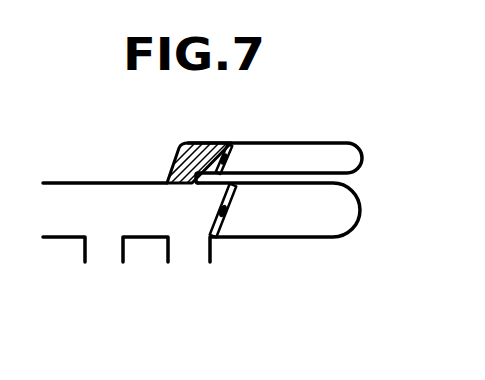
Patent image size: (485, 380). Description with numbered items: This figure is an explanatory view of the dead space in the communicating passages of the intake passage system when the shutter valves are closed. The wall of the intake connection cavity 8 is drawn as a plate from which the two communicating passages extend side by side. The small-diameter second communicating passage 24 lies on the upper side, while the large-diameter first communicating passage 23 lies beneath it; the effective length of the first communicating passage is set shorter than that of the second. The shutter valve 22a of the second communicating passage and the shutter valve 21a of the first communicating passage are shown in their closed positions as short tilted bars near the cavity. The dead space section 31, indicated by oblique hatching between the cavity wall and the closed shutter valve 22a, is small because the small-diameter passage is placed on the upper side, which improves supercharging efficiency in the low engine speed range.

The intake connection cavity 8 is at (74, 200).
The dead space section 31 is at (200, 158).
The second communicating passage 24 is at (346, 152).
The first communicating passage 23 is at (330, 206).
The shutter valve 22a is at (233, 150).
The shutter valve 21a is at (223, 218).